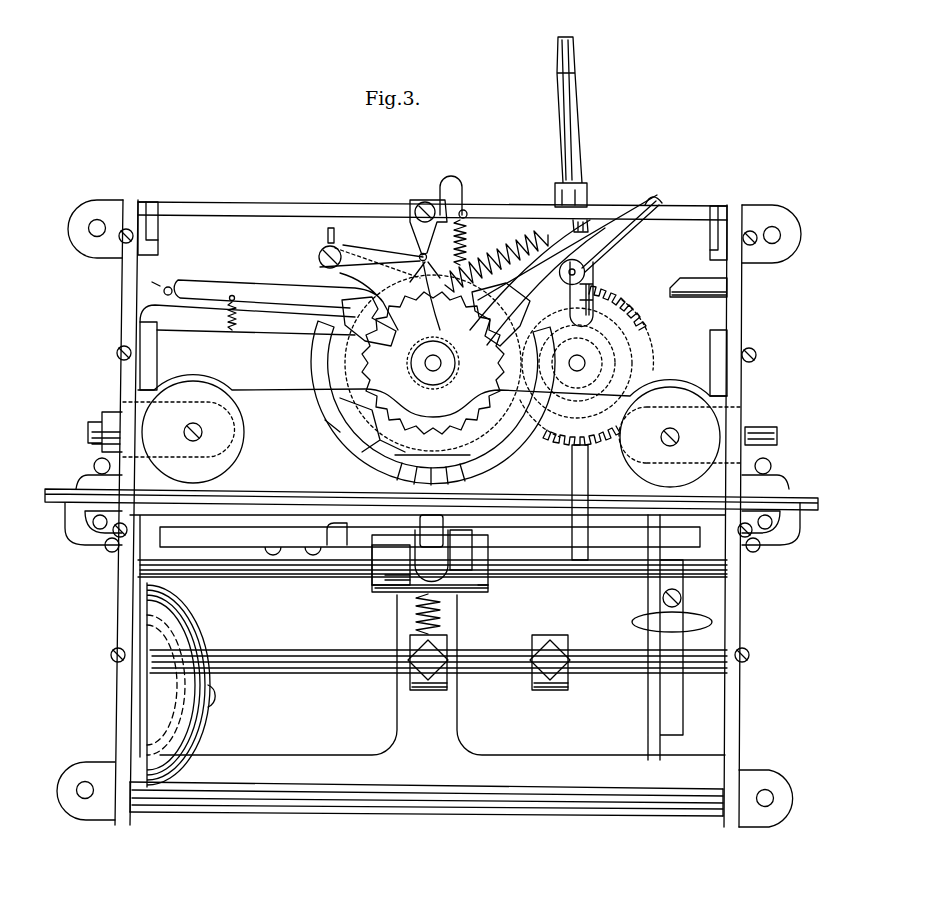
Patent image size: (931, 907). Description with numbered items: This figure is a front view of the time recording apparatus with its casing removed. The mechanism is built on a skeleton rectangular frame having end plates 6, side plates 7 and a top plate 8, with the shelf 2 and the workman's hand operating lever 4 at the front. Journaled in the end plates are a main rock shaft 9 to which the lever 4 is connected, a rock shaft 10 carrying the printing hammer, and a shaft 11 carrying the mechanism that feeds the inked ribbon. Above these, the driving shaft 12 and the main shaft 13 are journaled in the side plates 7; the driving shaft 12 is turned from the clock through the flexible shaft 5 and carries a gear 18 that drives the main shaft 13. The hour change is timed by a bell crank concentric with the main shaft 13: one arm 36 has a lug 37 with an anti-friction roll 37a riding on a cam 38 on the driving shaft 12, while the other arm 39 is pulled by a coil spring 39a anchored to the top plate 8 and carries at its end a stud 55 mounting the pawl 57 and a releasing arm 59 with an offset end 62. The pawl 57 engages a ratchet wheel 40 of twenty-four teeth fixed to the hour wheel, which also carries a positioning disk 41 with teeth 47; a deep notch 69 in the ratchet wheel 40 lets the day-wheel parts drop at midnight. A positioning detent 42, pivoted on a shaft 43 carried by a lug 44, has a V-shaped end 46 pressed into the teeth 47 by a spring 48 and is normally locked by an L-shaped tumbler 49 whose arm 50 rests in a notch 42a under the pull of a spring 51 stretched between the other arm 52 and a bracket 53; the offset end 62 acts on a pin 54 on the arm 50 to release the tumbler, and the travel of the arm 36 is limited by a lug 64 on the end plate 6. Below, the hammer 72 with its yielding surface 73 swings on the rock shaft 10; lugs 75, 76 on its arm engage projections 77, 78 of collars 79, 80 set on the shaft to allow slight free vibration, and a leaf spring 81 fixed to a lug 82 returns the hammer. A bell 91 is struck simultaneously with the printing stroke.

The shelf 2 is at (250, 501).
The operating lever 4 is at (692, 620).
The flexible shaft 5 is at (558, 97).
The end plates 6 is at (745, 660).
The side plates 7 is at (452, 727).
The top plate 8 is at (288, 207).
The main rock shaft 9 is at (604, 675).
The rock shaft 10 is at (554, 577).
The shaft 11 is at (278, 436).
The driving shaft 12 is at (570, 366).
The main shaft 13 is at (440, 360).
The gear 18 is at (625, 305).
The arm of bell crank 36 is at (650, 205).
The lug 37 is at (582, 268).
The anti-friction roll 37a is at (598, 212).
The cam 38 is at (595, 290).
The arm of bell crank 39 is at (433, 363).
The coil spring 39a is at (583, 205).
The ratchet wheel 40 is at (320, 320).
The positioning disk 41 is at (348, 454).
The positioning detent 42 is at (258, 282).
The notch 42a is at (398, 335).
The shaft 43 is at (174, 289).
The lug 44 is at (158, 285).
The V-shaped end 46 is at (437, 325).
The teeth 47 is at (440, 455).
The spring 48 is at (225, 321).
The L-shaped tumbler 49 is at (440, 200).
The arm of tumbler 50 is at (418, 204).
The spring 51 is at (475, 250).
The arm of tumbler 52 is at (466, 210).
The bracket 53 is at (528, 240).
The pin 54 is at (410, 215).
The stud 55 is at (318, 255).
The pawl 57 is at (378, 248).
The releasing arm 59 is at (358, 240).
The offset end 62 is at (405, 252).
The lug 64 is at (676, 280).
The deep notch 69 is at (323, 424).
The hammer 72 is at (431, 556).
The yielding surface 73 is at (433, 529).
The lug 75 is at (485, 560).
The lug 76 is at (395, 560).
The projection 77 is at (476, 545).
The projection 78 is at (398, 597).
The collar 79 is at (490, 585).
The collar 80 is at (392, 578).
The leaf spring 81 is at (340, 537).
The lug 82 is at (430, 539).
The bell 91 is at (181, 685).